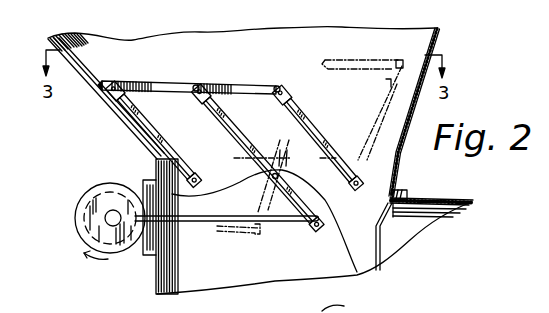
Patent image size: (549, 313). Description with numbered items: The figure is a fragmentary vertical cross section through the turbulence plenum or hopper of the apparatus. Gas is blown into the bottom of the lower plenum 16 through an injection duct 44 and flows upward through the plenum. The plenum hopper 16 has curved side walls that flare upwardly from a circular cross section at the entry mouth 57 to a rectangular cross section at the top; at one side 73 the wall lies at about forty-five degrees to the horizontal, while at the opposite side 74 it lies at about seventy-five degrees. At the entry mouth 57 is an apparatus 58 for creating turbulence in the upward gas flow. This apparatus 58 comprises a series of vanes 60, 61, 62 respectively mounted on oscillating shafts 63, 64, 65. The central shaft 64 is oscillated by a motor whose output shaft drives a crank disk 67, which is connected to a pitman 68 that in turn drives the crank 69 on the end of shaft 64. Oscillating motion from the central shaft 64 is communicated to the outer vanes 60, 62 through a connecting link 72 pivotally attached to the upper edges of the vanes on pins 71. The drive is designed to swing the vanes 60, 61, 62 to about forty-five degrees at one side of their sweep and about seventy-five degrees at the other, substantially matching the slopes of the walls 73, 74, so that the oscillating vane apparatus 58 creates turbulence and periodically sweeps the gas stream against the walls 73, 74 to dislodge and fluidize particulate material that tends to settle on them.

The lower plenum 16 is at (392, 42).
The injection duct 44 is at (452, 202).
The entry mouth 57 is at (156, 169).
The turbulence apparatus 58 is at (287, 66).
The vane 60 is at (372, 111).
The vane 61 is at (245, 138).
The vane 62 is at (170, 150).
The oscillating shaft 63 is at (354, 186).
The oscillating shaft 64 is at (278, 177).
The oscillating shaft 65 is at (193, 178).
The crank disk 67 is at (77, 220).
The pitman 68 is at (205, 223).
The crank 69 is at (302, 207).
The pin 71 is at (197, 85).
The connecting link 72 is at (240, 76).
The plenum wall side 73 is at (92, 87).
The plenum wall side 74 is at (409, 147).